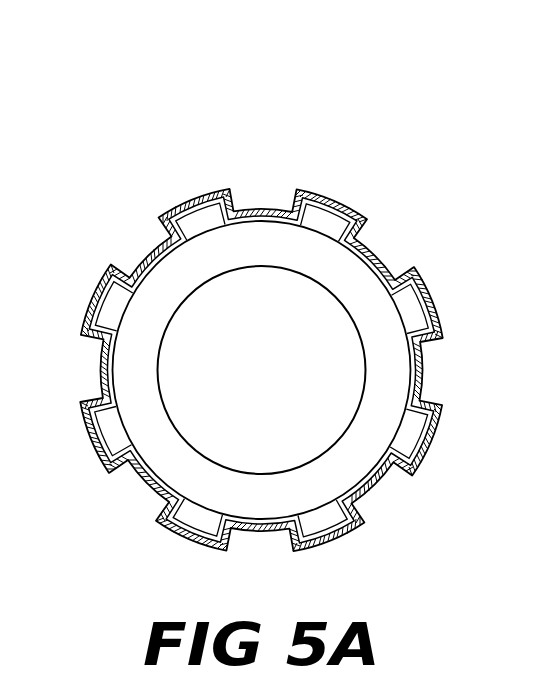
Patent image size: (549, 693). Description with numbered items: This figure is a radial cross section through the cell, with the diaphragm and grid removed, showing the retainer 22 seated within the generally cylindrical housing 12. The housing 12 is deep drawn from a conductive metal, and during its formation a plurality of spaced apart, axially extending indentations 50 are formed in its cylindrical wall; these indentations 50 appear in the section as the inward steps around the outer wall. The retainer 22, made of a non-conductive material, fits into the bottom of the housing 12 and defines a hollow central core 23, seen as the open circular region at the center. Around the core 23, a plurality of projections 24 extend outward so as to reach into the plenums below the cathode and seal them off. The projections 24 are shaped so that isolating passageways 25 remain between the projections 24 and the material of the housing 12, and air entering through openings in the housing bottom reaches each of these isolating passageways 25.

The housing 12 is at (327, 193).
The retainer 22 is at (400, 313).
The hollow central core 23 is at (173, 280).
The projections 24 is at (203, 217).
The isolating passageways 25 is at (177, 222).
The indentations 50 is at (272, 213).